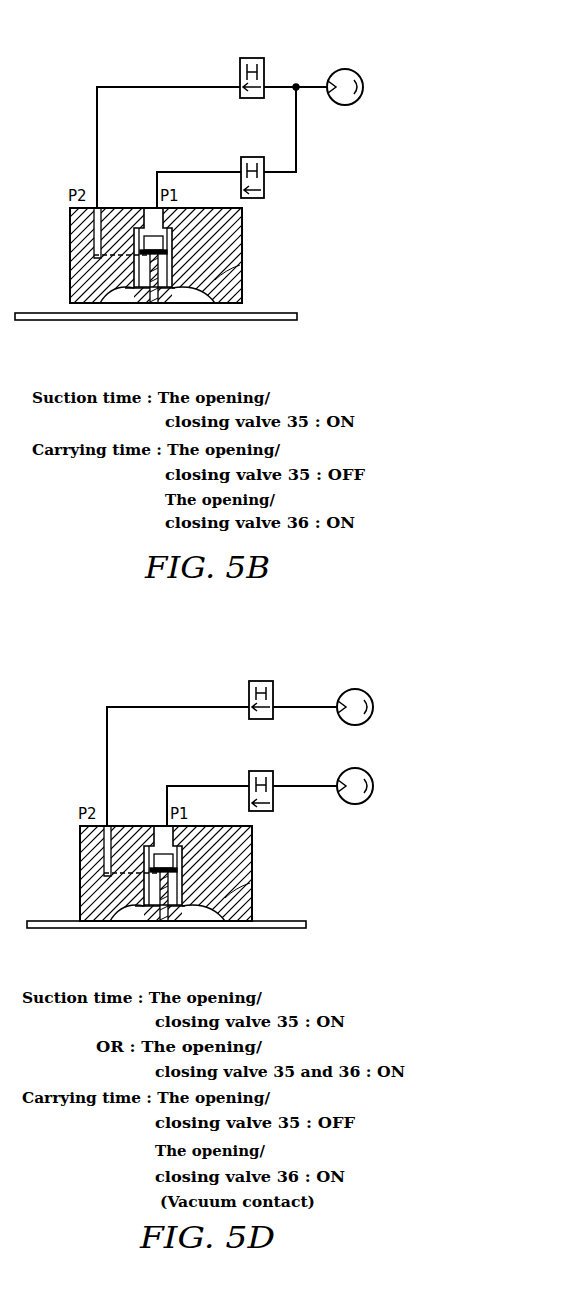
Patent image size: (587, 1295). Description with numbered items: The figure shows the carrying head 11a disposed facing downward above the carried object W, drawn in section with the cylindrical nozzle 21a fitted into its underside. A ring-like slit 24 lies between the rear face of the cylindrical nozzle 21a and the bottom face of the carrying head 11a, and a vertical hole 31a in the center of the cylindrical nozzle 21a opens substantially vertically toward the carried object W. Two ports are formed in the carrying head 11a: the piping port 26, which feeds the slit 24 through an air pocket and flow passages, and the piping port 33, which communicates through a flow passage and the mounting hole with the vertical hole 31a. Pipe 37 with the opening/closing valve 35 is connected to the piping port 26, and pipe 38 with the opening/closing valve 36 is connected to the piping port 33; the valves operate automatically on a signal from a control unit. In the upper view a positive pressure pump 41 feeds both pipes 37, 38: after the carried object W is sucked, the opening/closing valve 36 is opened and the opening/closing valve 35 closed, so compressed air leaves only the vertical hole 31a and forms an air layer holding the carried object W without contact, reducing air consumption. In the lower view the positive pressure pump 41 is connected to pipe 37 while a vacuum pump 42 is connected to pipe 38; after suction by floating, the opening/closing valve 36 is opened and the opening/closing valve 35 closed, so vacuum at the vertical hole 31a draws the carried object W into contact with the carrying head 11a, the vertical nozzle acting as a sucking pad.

In FIG. 5B, the carrying head 11a is at (70, 242).
In FIG. 5D, the carrying head 11a is at (170, 873).
In FIG. 5B, the cylindrical nozzle 21a is at (130, 305).
In FIG. 5D, the cylindrical nozzle 21a is at (143, 944).
In FIG. 5B, the slit 24 is at (218, 281).
In FIG. 5D, the slit 24 is at (254, 884).
In FIG. 5B, the piping port 26 is at (150, 207).
In FIG. 5D, the piping port 26 is at (151, 829).
In FIG. 5B, the vertical hole 31a is at (153, 305).
In FIG. 5D, the vertical hole 31a is at (164, 927).
In FIG. 5B, the piping port 33 is at (78, 218).
In FIG. 5D, the piping port 33 is at (100, 849).
In FIG. 5B, the opening/closing valve 35 is at (262, 196).
In FIG. 5D, the opening/closing valve 35 is at (271, 810).
In FIG. 5B, the opening/closing valve 36 is at (250, 57).
In FIG. 5D, the opening/closing valve 36 is at (259, 680).
In FIG. 5B, the pipe 37 is at (193, 171).
In FIG. 5D, the pipe 37 is at (205, 784).
In FIG. 5B, the pipe 38 is at (149, 85).
In FIG. 5D, the pipe 38 is at (160, 705).
In FIG. 5B, the positive pressure pump 41 is at (363, 87).
In FIG. 5D, the positive pressure pump 41 is at (373, 786).
In FIG. 5D, the vacuum pump 42 is at (373, 707).
In FIG. 5B, the carried object W is at (280, 312).
In FIG. 5D, the carried object W is at (166, 907).